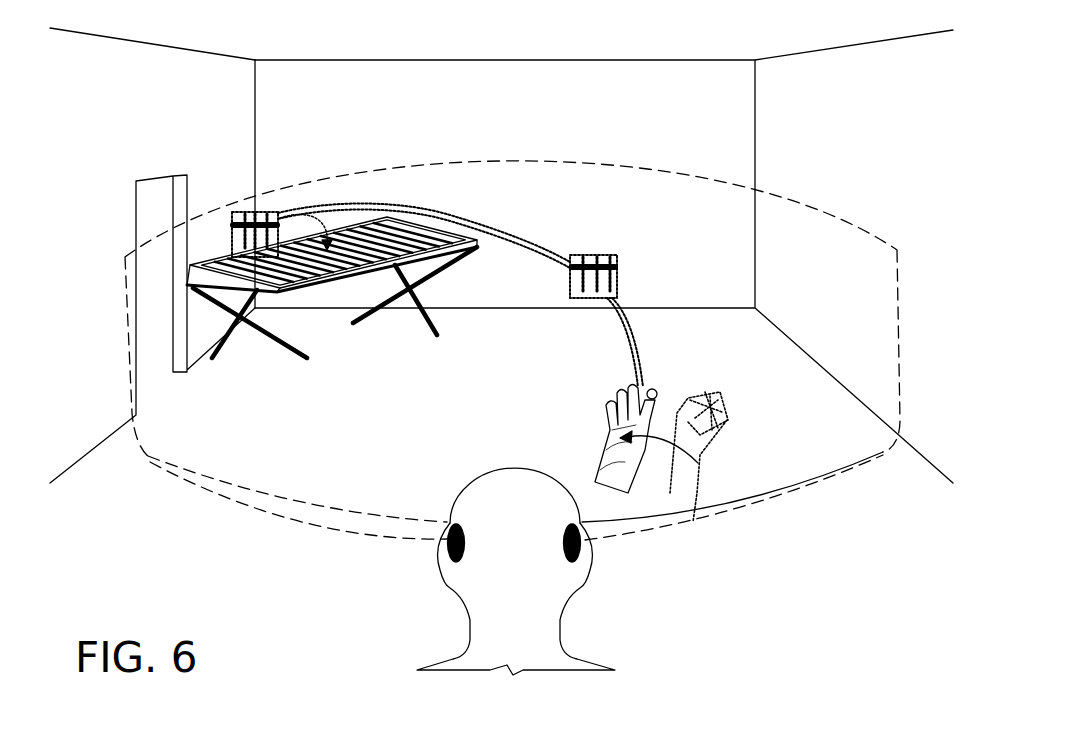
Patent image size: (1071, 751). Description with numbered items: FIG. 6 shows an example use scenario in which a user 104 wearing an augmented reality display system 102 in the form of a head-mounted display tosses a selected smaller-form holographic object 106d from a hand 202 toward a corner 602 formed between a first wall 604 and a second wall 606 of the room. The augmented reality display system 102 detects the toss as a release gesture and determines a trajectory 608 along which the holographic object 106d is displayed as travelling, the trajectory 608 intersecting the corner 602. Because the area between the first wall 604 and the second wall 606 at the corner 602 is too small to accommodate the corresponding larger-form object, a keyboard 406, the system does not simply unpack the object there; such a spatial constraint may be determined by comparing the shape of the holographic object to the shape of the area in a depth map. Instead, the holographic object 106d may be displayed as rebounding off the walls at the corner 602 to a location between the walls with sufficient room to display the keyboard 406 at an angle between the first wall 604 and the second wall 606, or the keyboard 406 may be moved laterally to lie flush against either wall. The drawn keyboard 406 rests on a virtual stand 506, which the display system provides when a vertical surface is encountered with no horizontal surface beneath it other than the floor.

The augmented reality display system 102 is at (582, 529).
The user 104 is at (536, 657).
The smaller-form holographic object 106d is at (603, 253).
The hand 202 is at (654, 390).
The larger-form object 406 is at (486, 243).
The virtual stand 506 is at (420, 292).
The corner 602 is at (255, 104).
The first wall 604 is at (169, 115).
The second wall 606 is at (321, 129).
The trajectory 608 is at (500, 225).